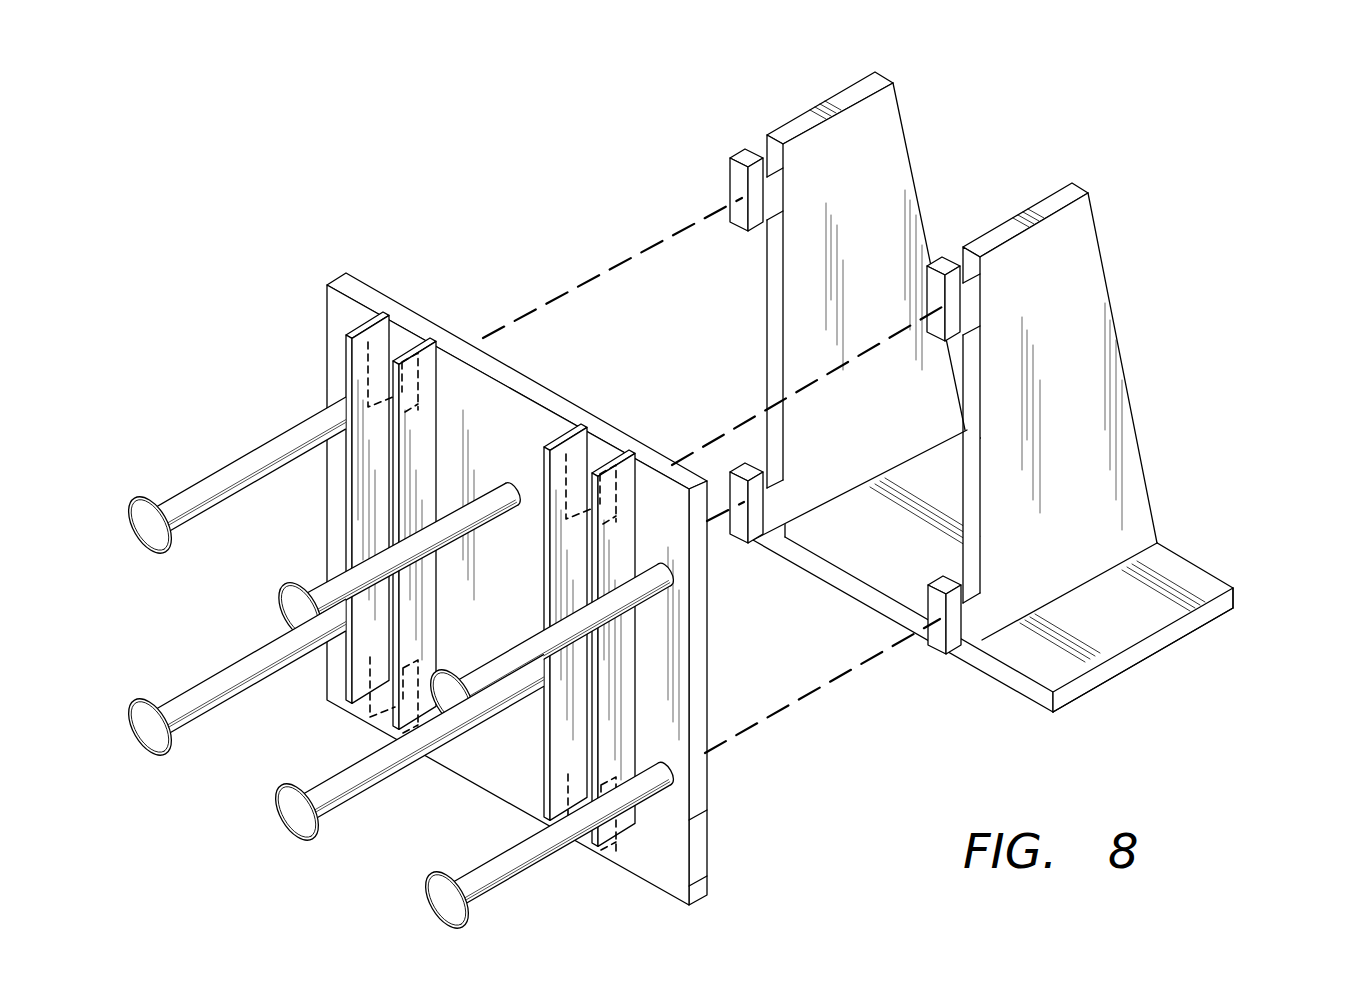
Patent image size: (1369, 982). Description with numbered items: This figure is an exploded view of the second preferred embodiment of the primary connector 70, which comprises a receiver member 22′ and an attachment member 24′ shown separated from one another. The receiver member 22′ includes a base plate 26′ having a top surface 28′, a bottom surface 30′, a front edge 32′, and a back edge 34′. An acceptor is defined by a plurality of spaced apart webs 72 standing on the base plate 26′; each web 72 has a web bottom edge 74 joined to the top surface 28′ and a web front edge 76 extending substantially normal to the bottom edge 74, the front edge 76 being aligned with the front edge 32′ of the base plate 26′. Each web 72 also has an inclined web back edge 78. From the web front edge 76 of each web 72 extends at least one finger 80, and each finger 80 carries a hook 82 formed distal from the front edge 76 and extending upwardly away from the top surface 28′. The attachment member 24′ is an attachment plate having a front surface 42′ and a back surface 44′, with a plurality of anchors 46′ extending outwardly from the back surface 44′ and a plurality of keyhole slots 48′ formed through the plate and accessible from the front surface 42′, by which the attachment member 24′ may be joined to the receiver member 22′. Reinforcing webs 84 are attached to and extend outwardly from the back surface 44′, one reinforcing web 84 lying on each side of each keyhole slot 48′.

The primary connector 70 is at (548, 176).
The attachment member 24′ is at (290, 263).
The receiver member 22′ is at (975, 165).
The front surface 42′ is at (588, 589).
The back surface 44′ is at (502, 407).
The anchors 46′ is at (267, 457).
The keyhole slots 48′ is at (407, 355).
The reinforcing webs 84 is at (496, 554).
The webs 72 is at (955, 385).
The web bottom edge 74 is at (833, 503).
The web front edge 76 is at (767, 362).
The inclined web back edge 78 is at (903, 130).
The finger 80 is at (788, 215).
The hook 82 is at (745, 150).
The top surface 28′ is at (1043, 605).
The base plate 26′ is at (1153, 642).
The bottom surface 30′ is at (1093, 693).
The front edge 32′ is at (1028, 700).
The back edge 34′ is at (1233, 598).